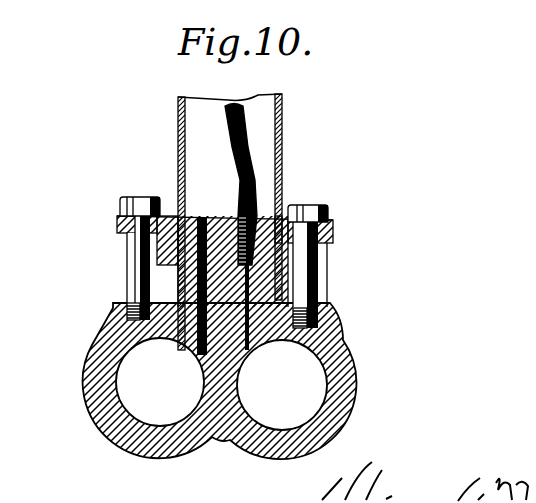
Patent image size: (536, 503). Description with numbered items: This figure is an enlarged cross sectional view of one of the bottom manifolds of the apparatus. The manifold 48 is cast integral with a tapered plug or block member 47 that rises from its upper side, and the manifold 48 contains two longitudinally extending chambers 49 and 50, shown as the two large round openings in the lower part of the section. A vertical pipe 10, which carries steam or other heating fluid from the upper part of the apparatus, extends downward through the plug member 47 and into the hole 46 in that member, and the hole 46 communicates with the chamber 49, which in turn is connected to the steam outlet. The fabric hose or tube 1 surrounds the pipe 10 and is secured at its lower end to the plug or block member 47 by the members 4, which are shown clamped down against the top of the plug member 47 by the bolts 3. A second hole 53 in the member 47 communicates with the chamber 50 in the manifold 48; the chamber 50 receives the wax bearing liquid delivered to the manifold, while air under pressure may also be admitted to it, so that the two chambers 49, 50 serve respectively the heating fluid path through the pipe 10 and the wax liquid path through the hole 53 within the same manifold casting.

The fabric tube 1 is at (282, 128).
The vertical pipe 10 is at (243, 153).
The hole 46 is at (277, 193).
The hole 53 is at (202, 216).
The bolts 3 is at (335, 268).
The securing member 4 is at (267, 253).
The tapered plug or block member 47 is at (262, 283).
The manifold 48 is at (337, 347).
The chamber 49 is at (302, 372).
The chamber 50 is at (137, 366).